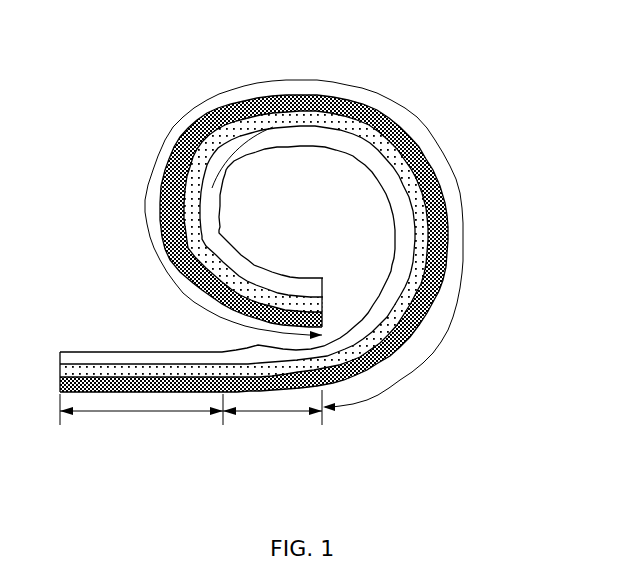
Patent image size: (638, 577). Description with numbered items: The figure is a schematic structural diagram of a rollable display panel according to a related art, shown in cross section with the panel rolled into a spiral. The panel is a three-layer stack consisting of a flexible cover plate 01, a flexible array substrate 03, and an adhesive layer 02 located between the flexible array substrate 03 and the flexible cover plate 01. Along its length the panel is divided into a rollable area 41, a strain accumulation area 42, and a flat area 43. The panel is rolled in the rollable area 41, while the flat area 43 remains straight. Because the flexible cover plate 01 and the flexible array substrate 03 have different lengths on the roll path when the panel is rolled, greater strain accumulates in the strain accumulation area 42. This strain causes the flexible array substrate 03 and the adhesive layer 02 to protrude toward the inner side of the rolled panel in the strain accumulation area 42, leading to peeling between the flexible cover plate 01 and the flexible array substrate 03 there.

The flexible cover plate 01 is at (433, 181).
The adhesive layer 02 is at (425, 251).
The flexible array substrate 03 is at (350, 142).
The rollable area 41 is at (454, 318).
The strain accumulation area 42 is at (268, 412).
The flat area 43 is at (118, 412).